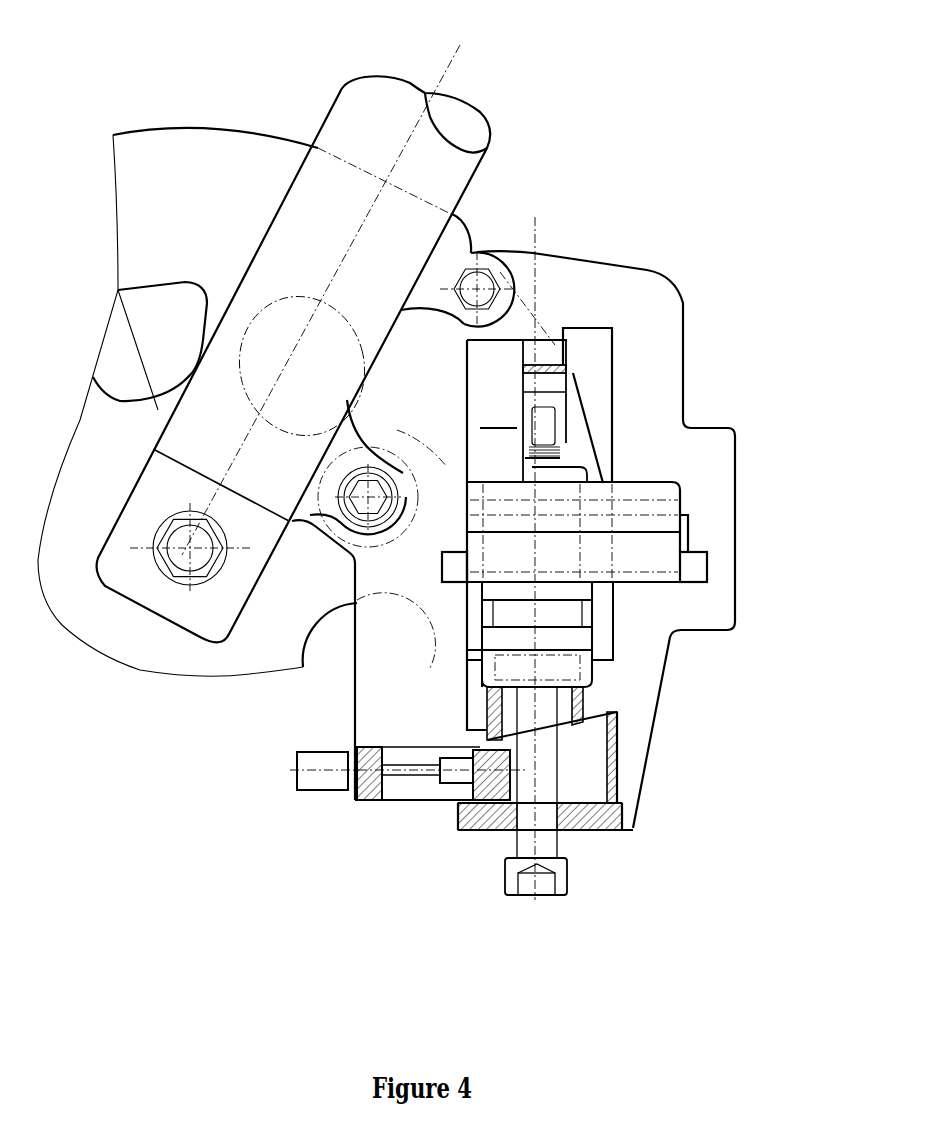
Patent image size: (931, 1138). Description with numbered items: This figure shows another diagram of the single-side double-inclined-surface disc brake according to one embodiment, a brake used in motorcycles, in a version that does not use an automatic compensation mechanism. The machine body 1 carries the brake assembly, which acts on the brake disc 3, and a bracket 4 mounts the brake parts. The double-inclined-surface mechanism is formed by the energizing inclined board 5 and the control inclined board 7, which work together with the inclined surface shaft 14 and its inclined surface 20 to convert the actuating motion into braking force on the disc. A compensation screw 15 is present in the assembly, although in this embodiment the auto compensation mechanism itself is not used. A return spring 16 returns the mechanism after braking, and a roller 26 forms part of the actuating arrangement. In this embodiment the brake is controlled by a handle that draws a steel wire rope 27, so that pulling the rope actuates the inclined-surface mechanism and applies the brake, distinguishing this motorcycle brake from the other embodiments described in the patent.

The machine body 1 is at (653, 507).
The brake disc 3 is at (215, 203).
The bracket 4 is at (643, 310).
The energizing inclined board 5 is at (592, 630).
The control inclined board 7 is at (592, 602).
The inclined surface shaft 14 is at (613, 740).
The compensation screw 15 is at (572, 363).
The return spring 16 is at (560, 867).
The inclined surface 20 is at (573, 720).
The roller 26 is at (582, 700).
The steel wire rope 27 is at (437, 782).